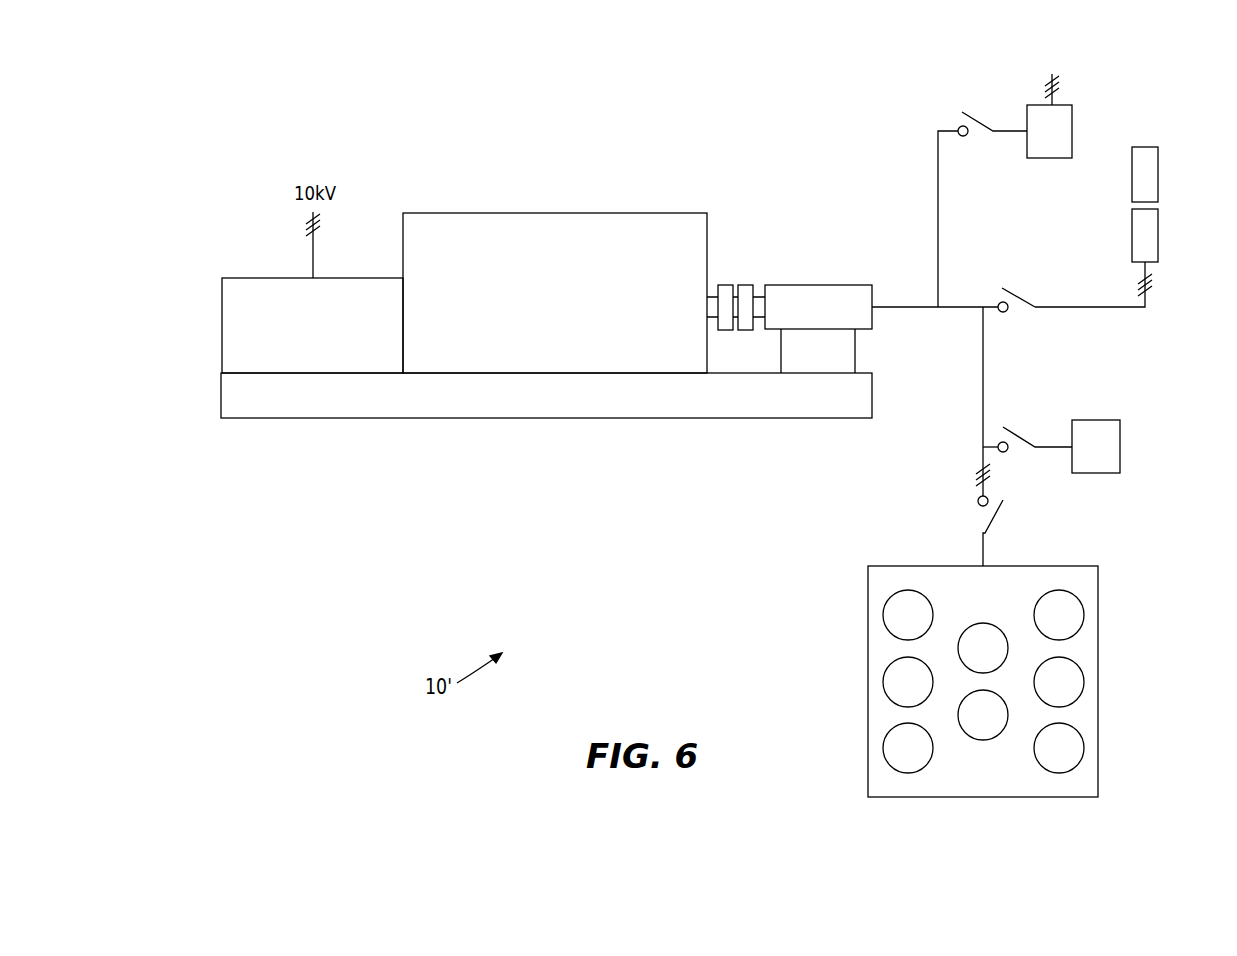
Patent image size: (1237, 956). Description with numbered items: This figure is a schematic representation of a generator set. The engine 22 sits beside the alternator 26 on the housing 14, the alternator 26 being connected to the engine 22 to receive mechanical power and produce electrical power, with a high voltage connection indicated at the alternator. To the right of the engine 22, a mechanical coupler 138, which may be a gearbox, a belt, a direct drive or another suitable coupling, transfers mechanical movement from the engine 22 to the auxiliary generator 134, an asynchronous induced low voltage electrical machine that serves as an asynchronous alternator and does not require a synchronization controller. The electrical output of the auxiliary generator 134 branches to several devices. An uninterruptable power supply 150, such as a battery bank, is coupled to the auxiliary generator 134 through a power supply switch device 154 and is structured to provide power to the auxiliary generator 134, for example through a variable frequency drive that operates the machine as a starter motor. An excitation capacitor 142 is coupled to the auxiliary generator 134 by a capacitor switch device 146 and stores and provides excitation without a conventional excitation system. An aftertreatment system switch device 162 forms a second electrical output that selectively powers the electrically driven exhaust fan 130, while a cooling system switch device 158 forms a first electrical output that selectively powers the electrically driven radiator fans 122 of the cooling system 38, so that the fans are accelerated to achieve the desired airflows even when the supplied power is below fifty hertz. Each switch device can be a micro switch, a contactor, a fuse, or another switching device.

The housing 14 is at (367, 403).
The engine 22 is at (488, 213).
The alternator 26 is at (222, 300).
The cooling system 38 is at (937, 681).
The radiator fans 122 is at (898, 623).
The exhaust fan 130 is at (1158, 217).
The auxiliary generator 134 is at (818, 315).
The mechanical coupler 138 is at (747, 328).
The excitation capacitor 142 is at (1120, 444).
The capacitor switch device 146 is at (1022, 432).
The uninterruptable power supply 150 is at (1072, 122).
The power supply switch device 154 is at (980, 117).
The cooling system switch device 158 is at (987, 525).
The aftertreatment system switch device 162 is at (1023, 293).